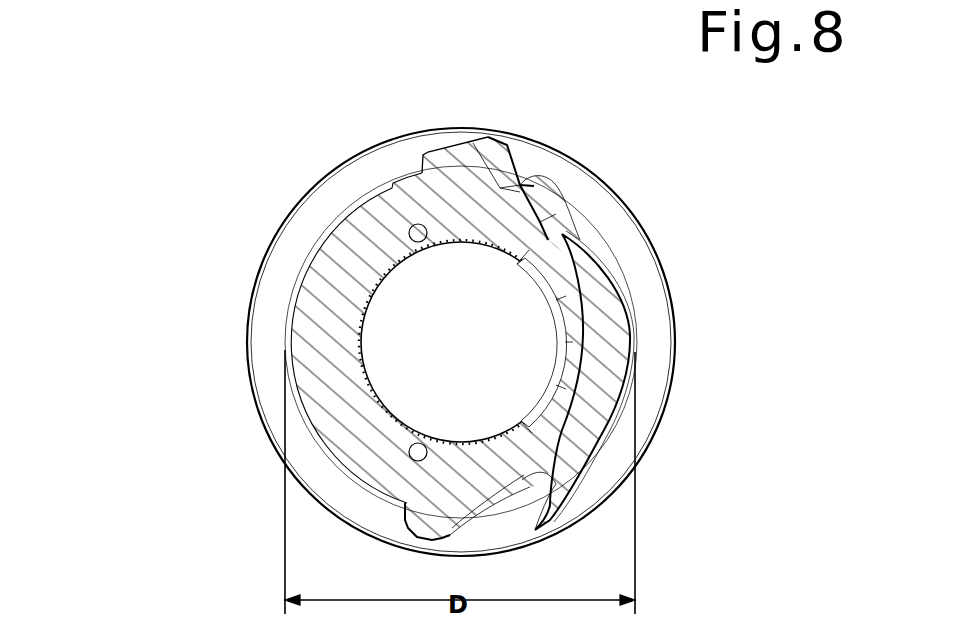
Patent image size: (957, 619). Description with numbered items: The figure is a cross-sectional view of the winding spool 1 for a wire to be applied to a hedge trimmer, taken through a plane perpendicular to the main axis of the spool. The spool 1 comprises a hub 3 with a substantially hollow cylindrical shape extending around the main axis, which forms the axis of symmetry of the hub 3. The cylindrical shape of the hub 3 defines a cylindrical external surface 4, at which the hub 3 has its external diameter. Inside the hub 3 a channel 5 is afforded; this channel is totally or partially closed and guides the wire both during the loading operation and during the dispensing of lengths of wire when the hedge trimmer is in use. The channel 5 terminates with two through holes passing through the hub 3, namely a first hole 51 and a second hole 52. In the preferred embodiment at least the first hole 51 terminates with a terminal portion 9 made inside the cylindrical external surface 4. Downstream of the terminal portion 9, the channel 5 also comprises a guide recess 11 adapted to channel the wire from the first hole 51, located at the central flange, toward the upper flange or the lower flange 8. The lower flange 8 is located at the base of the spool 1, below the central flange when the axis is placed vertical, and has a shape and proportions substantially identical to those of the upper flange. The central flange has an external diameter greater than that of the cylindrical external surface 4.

The winding spool 1 is at (151, 151).
The hub 3 is at (325, 298).
The cylindrical external surface 4 is at (321, 240).
The channel 5 is at (617, 354).
The lower flange 8 is at (275, 377).
The terminal portion 9 is at (541, 206).
The guide recess 11 is at (540, 185).
The first hole 51 is at (553, 232).
The second hole 52 is at (540, 497).